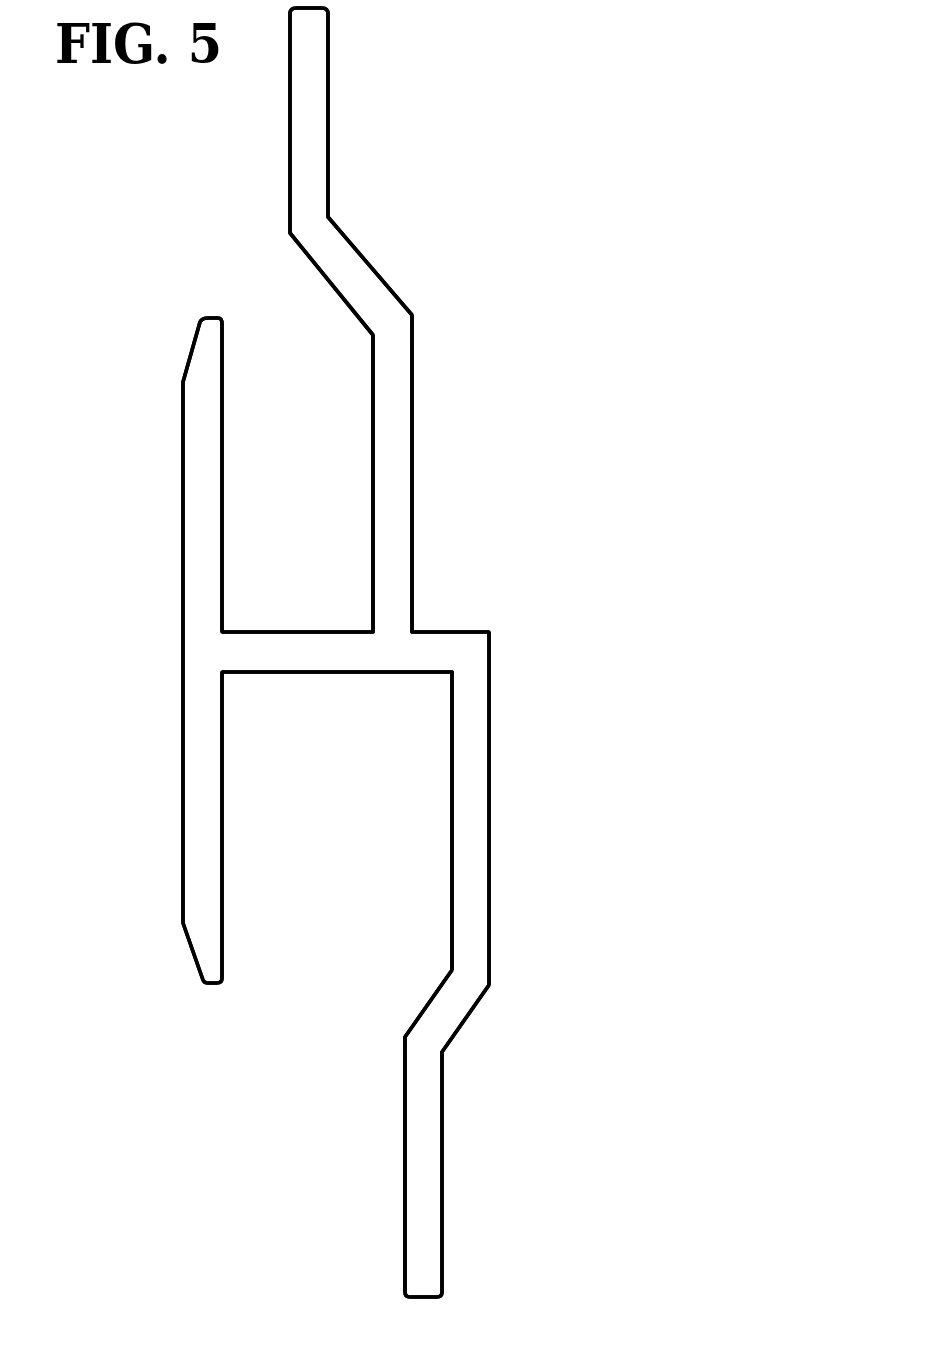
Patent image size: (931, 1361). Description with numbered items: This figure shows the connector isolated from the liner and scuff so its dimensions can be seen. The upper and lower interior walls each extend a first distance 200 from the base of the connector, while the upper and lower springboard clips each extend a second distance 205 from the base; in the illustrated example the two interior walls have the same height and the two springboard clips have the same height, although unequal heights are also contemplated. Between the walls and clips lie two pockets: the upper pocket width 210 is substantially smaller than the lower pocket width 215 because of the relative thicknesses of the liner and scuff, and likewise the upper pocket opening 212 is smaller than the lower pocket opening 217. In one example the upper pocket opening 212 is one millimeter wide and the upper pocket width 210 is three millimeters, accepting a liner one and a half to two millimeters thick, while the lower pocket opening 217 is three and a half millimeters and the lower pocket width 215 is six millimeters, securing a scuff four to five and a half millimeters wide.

The first distance 200 is at (178, 318).
The second distance 205 is at (413, 8).
The upper pocket width 210 is at (225, 413).
The upper pocket opening 212 is at (290, 173).
The lower pocket width 215 is at (451, 805).
The lower pocket opening 217 is at (223, 1055).